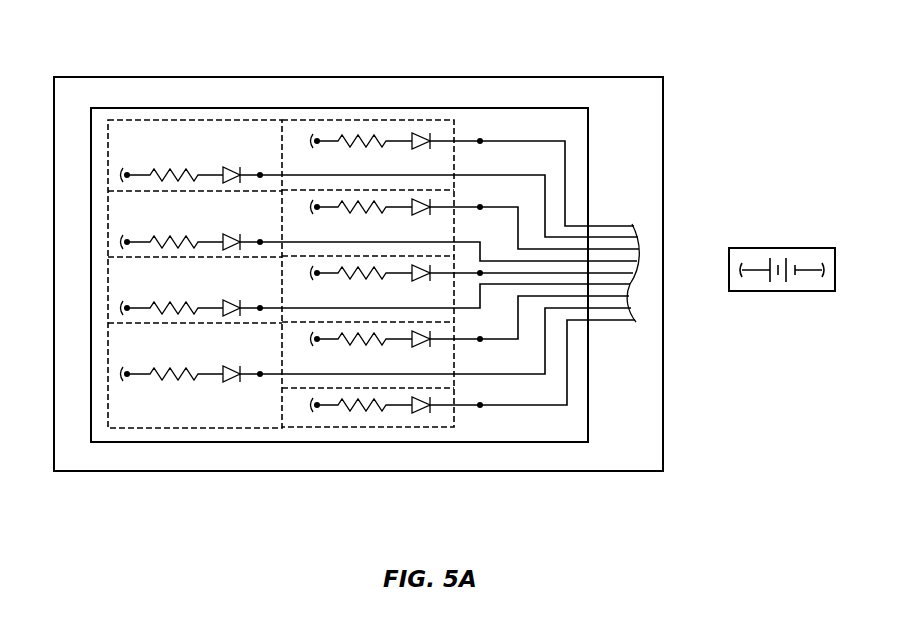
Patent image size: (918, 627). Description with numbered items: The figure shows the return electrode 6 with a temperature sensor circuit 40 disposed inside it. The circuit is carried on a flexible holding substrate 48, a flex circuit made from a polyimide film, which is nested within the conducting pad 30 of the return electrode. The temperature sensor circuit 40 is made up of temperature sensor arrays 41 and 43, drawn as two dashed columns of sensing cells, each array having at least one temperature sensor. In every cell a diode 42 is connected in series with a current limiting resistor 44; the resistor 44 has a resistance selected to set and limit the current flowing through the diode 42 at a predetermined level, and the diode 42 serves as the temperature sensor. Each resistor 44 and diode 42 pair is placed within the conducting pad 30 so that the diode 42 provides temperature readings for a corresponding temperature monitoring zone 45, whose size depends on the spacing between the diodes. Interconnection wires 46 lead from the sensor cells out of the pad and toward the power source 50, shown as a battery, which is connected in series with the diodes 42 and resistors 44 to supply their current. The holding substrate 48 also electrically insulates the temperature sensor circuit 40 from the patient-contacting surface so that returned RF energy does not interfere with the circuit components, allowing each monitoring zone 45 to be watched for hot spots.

The return electrode 6 is at (130, 50).
The conducting pad 30 is at (568, 471).
The holding substrate 48 is at (590, 384).
The temperature sensor circuit 40 is at (298, 452).
The temperature sensor array 41 is at (144, 315).
The temperature sensor array 43 is at (371, 437).
The diode 42 is at (234, 158).
The current limiting resistor 44 is at (179, 158).
The temperature monitoring zone 45 is at (108, 320).
The interconnection wires 46 is at (522, 173).
The power source 50 is at (771, 248).